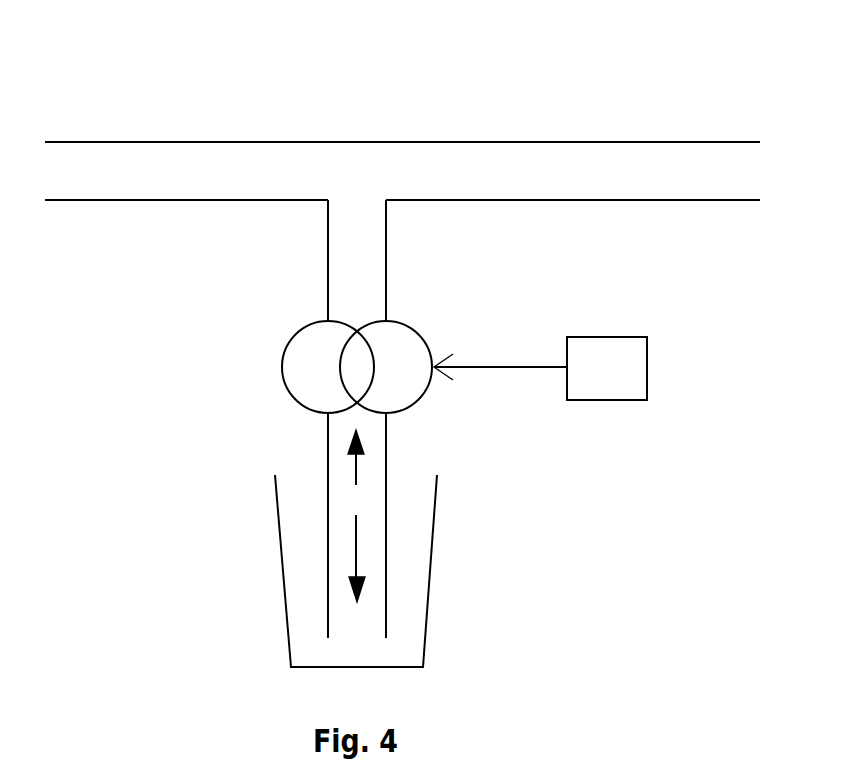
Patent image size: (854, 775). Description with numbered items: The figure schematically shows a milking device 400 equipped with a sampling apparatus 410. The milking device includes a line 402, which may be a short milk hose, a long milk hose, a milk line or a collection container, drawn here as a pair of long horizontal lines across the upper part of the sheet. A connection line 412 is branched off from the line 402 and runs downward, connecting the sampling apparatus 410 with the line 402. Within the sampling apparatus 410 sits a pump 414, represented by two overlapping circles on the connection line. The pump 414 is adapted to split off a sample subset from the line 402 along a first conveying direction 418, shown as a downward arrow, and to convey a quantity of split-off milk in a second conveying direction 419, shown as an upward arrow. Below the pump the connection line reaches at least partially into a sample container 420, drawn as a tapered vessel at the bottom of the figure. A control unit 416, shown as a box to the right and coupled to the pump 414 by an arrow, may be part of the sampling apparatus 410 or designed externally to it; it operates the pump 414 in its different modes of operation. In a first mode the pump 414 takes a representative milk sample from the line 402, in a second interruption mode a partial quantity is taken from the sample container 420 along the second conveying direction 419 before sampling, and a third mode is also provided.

The milking device 400 is at (176, 73).
The line 402 is at (648, 142).
The sampling apparatus 410 is at (594, 460).
The connection line 412 is at (386, 262).
The pump 414 is at (264, 366).
The control unit 416 is at (629, 384).
The first conveying direction 418 is at (356, 530).
The second conveying direction 419 is at (358, 470).
The sample container 420 is at (426, 610).